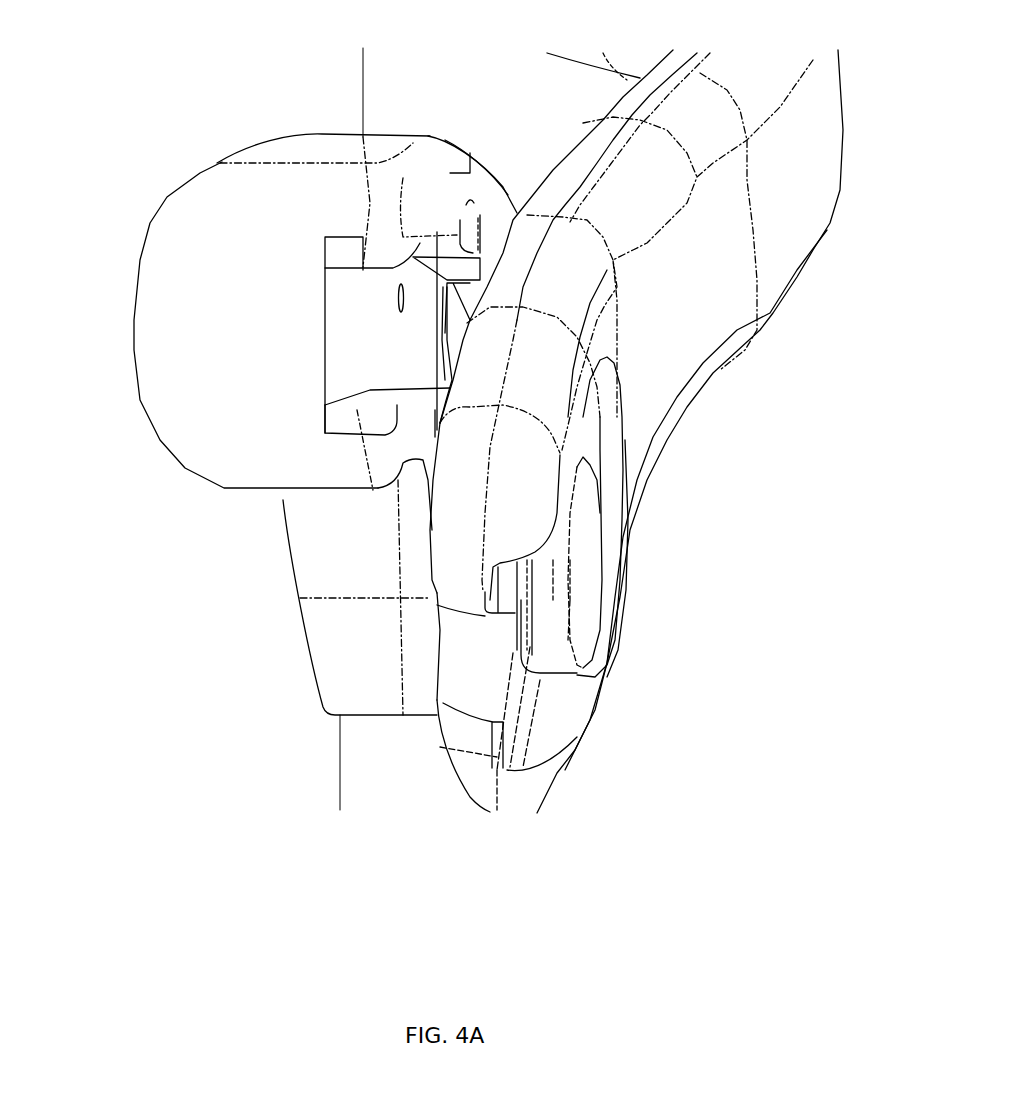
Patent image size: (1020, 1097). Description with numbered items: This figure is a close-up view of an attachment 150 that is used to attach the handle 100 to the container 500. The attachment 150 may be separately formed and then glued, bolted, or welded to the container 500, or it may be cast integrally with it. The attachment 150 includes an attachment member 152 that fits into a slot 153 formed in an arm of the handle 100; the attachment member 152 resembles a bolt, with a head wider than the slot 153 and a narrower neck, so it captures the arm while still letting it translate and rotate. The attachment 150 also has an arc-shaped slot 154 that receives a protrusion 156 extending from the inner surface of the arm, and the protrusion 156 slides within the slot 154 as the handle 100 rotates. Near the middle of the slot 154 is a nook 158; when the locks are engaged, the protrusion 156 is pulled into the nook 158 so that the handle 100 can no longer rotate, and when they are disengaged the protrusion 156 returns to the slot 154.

The handle 100 is at (703, 300).
The attachment 150 is at (152, 188).
The attachment member 152 is at (583, 603).
The slot 153 is at (603, 462).
The slot 154 is at (353, 357).
The protrusion 156 is at (460, 313).
The nook 158 is at (463, 213).
The container 500 is at (297, 770).